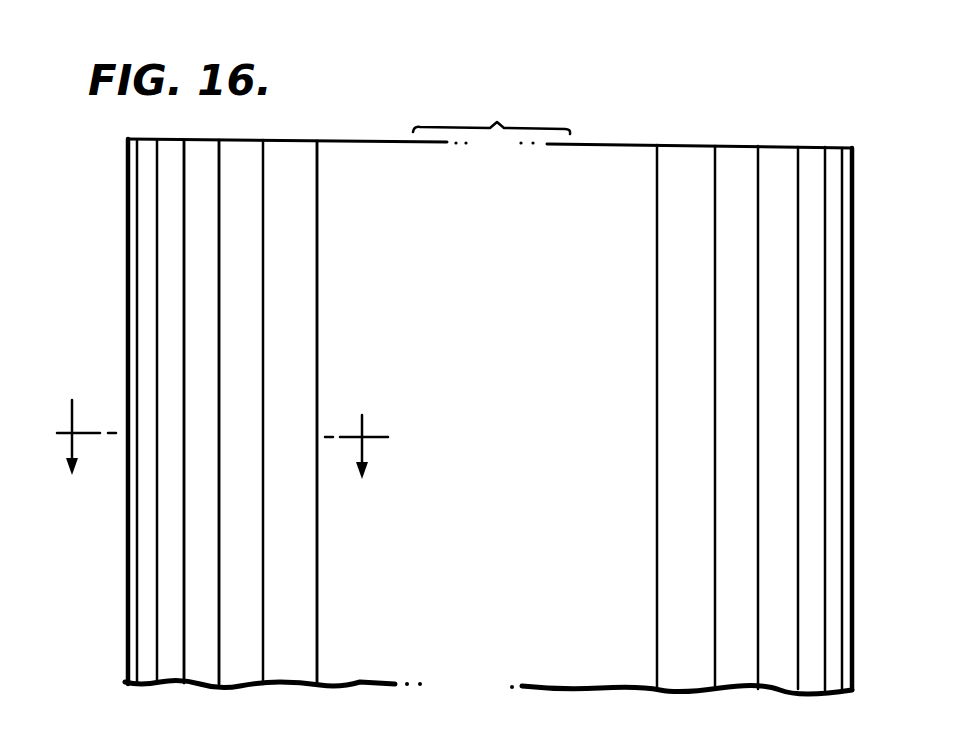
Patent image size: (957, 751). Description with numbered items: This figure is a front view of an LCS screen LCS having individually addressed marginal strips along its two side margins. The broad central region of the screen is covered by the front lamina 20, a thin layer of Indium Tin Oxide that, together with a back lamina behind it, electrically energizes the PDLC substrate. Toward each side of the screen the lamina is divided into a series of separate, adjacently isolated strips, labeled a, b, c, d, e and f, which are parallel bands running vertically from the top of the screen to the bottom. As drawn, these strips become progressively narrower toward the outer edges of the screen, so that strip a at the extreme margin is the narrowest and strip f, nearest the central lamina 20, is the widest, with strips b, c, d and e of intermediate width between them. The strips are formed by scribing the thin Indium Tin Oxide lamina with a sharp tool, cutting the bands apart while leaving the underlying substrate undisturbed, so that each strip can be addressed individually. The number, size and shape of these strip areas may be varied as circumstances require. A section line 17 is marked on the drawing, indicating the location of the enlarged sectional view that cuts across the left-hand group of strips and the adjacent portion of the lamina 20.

The front lamina 20 is at (488, 416).
The section line 17— 17 is at (216, 422).
The LCS screen LCS is at (691, 146).
The isolated lamina strip 20a a is at (132, 191).
The isolated lamina strip 20b b is at (146, 245).
The isolated lamina strip 20c c is at (170, 300).
The isolated lamina strip 20d d is at (200, 521).
The isolated lamina strip 20e e is at (236, 577).
The isolated lamina strip 20f f is at (282, 633).